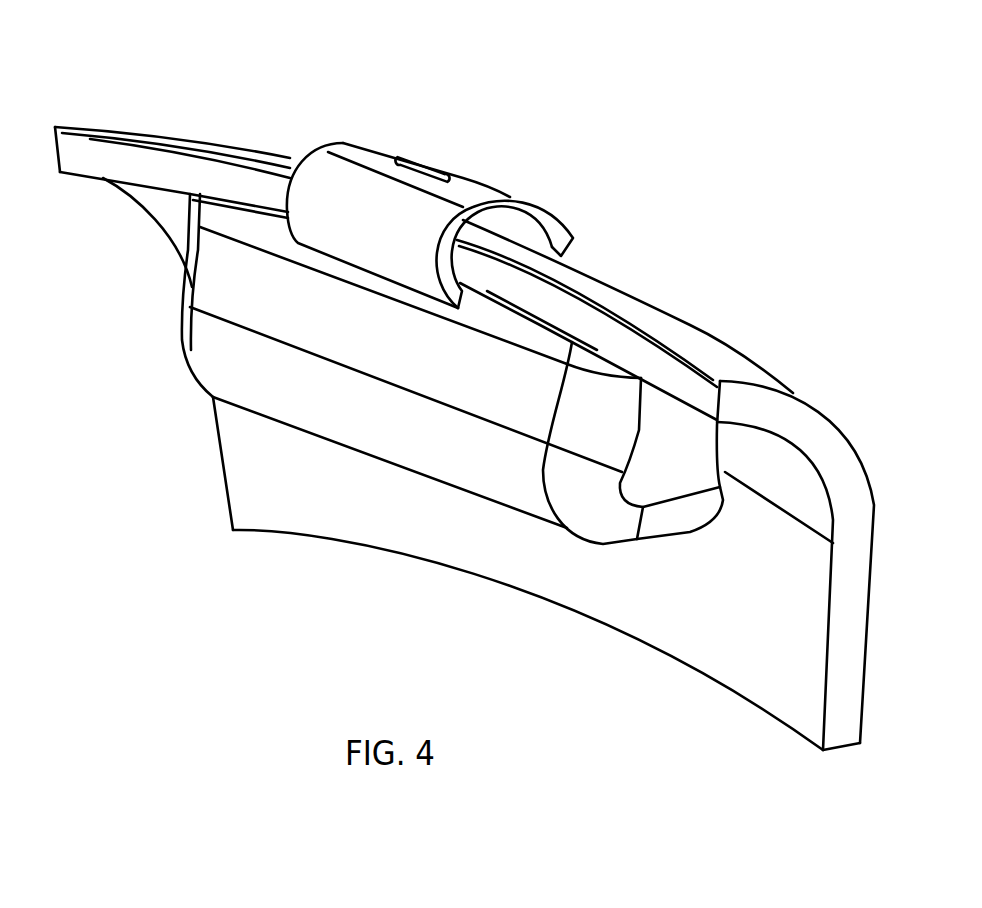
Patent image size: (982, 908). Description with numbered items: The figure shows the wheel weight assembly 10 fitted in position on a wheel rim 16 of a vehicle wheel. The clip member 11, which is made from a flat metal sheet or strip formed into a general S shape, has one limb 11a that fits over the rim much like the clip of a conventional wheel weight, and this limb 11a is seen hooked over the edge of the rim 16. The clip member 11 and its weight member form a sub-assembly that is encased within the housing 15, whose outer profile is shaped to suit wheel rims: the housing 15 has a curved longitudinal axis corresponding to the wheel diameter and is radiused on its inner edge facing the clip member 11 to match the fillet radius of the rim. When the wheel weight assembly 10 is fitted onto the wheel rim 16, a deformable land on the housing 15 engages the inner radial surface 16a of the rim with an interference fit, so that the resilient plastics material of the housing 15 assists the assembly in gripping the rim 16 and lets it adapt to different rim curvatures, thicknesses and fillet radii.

The wheel weight assembly 10 is at (175, 375).
The clip member 11 is at (410, 156).
The limb 11a is at (462, 220).
The housing 15 is at (440, 447).
The wheel rim 16 is at (464, 451).
The inner radial surface 16a is at (780, 475).